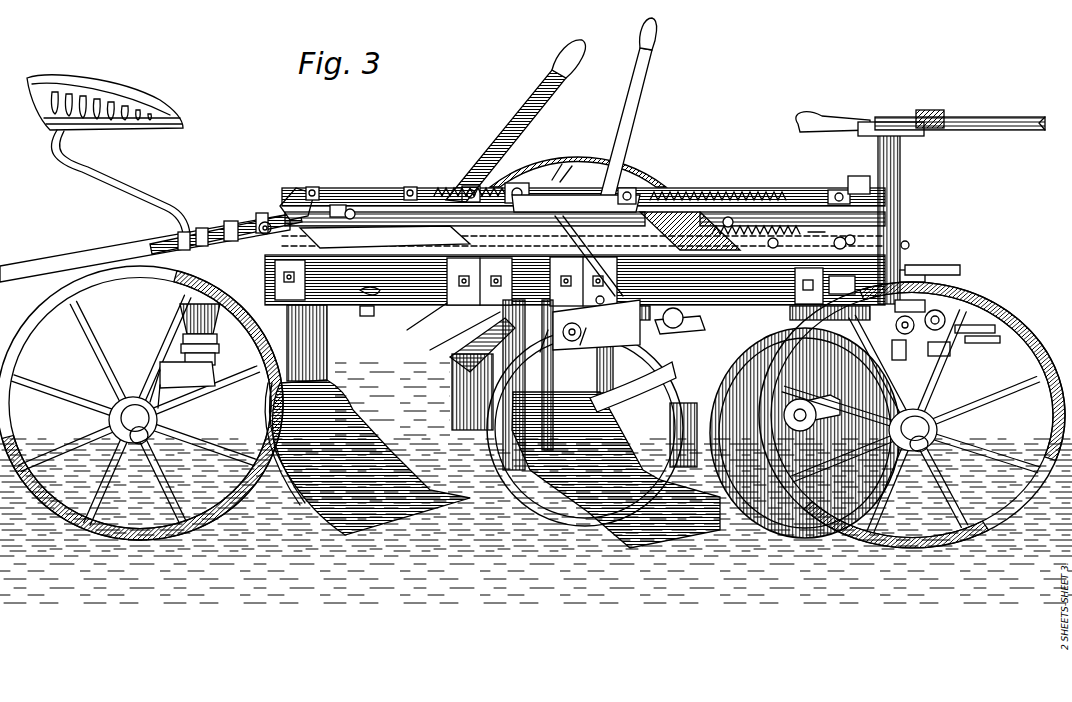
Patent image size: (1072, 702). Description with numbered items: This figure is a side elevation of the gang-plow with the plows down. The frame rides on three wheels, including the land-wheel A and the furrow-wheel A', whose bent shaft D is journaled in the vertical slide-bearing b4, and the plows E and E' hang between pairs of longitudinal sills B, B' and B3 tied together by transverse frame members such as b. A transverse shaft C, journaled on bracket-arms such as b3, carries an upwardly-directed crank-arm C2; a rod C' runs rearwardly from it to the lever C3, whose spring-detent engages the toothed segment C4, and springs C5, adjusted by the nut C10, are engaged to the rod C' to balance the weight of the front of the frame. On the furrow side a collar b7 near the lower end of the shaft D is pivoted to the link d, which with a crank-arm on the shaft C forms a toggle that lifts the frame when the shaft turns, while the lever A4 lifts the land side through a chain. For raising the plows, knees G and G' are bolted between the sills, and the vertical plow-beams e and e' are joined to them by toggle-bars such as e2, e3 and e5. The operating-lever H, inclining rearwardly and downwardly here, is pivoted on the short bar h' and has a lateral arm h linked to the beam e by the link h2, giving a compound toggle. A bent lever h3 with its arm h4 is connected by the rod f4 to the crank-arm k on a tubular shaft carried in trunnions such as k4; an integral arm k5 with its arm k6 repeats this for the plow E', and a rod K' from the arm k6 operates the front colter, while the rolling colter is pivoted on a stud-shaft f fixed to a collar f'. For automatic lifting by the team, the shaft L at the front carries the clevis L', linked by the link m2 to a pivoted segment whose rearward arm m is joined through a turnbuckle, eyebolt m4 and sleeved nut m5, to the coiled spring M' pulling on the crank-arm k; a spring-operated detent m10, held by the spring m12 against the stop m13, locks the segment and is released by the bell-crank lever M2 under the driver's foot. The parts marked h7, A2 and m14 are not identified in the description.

The operating-lever H is at (112, 258).
The bell-crank lever M2 is at (228, 232).
The laterally-directed arm h is at (255, 206).
The short bar h' is at (290, 181).
The transverse shaft C is at (644, 245).
The crank-arm C2 is at (905, 248).
The vertical beam e is at (316, 153).
The link h2 is at (332, 188).
The bent lever h3 is at (338, 205).
The toggle-bar e2 is at (351, 209).
The arm h4 is at (360, 236).
The toothed segment C4 is at (378, 226).
The knee G is at (450, 176).
The connecting-rod f4 is at (470, 215).
The spring C5 is at (690, 196).
The lever C3 is at (488, 168).
The lever A4 is at (652, 62).
The vertical beam e' is at (527, 164).
The link h7 is at (556, 162).
The toggle-bar e5 is at (580, 195).
The crank-arm k is at (612, 205).
The knee G' is at (651, 181).
The coiled spring M' is at (693, 203).
The rod C' is at (749, 188).
The rod K' is at (780, 204).
The sleeved nut m5 is at (852, 200).
The stop m13 is at (810, 230).
The nut C10 is at (850, 236).
The spring m12 is at (838, 232).
The threaded eyebolt m4 is at (842, 240).
The shaft D is at (900, 214).
The shaft L is at (960, 183).
The arm m is at (947, 238).
The vertical slide-bearing b4 is at (912, 272).
The clevis L' is at (959, 288).
The transverse frame member b is at (948, 326).
The collar b7 is at (912, 345).
The bracket-arm b3 is at (925, 356).
The front wheel A2 is at (160, 528).
The land-wheel A is at (332, 367).
The longitudinal sill B' is at (805, 433).
The plow E' is at (367, 420).
The plow E is at (603, 424).
The stud-shaft f is at (680, 387).
The collar f' is at (611, 313).
The link m2 is at (635, 294).
The longitudinal sill B3 is at (684, 278).
The spring-operated detent m10 is at (755, 292).
The longitudinal sill B is at (500, 324).
The toggle-bar e3 is at (369, 319).
The rod m14 is at (425, 318).
The integral arm k5 is at (456, 337).
The arm k6 is at (540, 347).
The trunnion k4 is at (580, 344).
The link d is at (858, 330).
The furrow-wheel A' is at (912, 434).